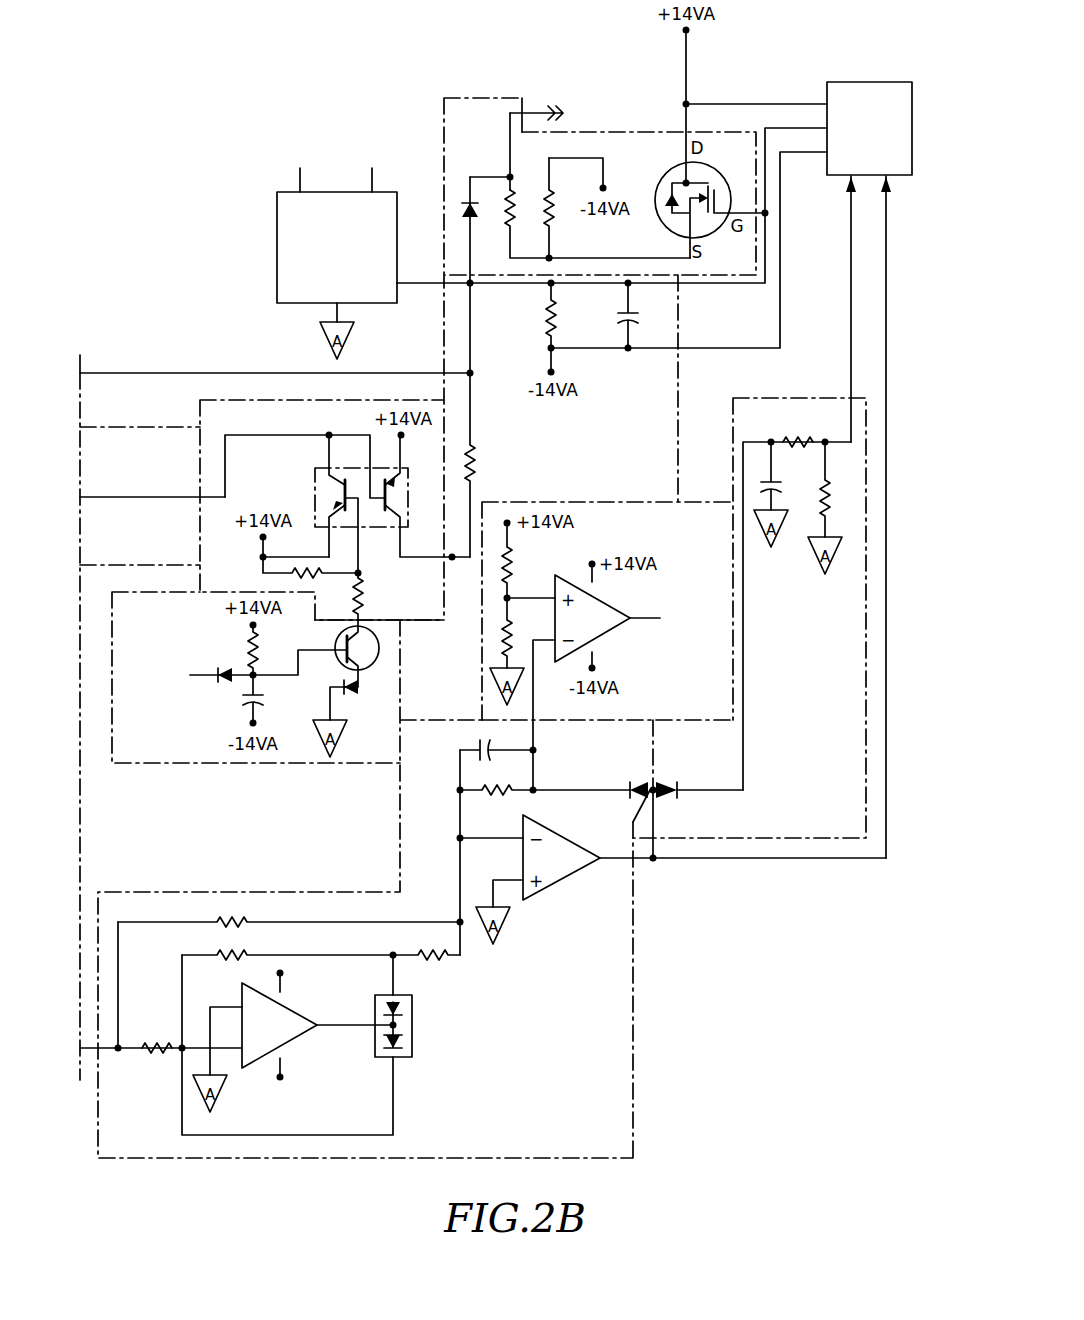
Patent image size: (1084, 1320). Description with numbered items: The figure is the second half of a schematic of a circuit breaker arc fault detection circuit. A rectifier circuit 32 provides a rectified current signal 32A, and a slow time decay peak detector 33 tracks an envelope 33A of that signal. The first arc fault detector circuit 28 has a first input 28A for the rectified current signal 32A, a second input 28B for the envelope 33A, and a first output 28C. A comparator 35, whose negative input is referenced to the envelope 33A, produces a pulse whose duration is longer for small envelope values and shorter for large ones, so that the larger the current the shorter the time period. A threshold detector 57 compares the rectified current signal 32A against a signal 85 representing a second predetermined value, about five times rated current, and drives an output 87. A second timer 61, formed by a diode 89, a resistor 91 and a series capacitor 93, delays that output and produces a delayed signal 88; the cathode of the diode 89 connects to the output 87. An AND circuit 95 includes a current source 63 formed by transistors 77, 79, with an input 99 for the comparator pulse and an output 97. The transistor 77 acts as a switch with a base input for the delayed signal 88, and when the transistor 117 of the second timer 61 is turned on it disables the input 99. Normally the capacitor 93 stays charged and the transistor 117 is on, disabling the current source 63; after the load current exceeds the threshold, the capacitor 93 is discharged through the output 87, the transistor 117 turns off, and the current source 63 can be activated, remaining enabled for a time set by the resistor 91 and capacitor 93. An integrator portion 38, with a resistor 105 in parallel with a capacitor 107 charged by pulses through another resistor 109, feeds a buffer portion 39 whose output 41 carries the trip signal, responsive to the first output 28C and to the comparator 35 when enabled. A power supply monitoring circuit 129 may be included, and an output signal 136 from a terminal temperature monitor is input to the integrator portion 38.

The first arc fault detector circuit 28 is at (858, 82).
The first input 28A is at (888, 186).
The second input 28B is at (851, 190).
The first output 28C is at (827, 128).
The rectifier circuit 32 is at (635, 1021).
The rectified current signal 32A is at (535, 730).
The slow time decay peak detector 33 is at (798, 398).
The envelope 33A is at (742, 795).
The comparator 35 is at (135, 427).
The integrator portion 38 is at (444, 327).
The buffer portion 39 is at (444, 104).
The output 41 is at (537, 113).
The threshold detector 57 is at (733, 500).
The second timer 61 is at (196, 765).
The current source 63 is at (355, 504).
The transistor 77 is at (345, 490).
The transistor 79 is at (402, 508).
The signal representative of a second predetermined value 85 is at (525, 596).
The output 87 is at (200, 672).
The delayed signal 88 is at (365, 616).
The diode 89 is at (222, 685).
The resistor 91 is at (247, 648).
The capacitor 93 is at (265, 698).
The AND circuit 95 is at (200, 412).
The output 97 is at (452, 560).
The input 99 is at (292, 435).
The resistor 105 is at (543, 320).
The capacitor 107 is at (620, 317).
The resistor 109 is at (482, 462).
The transistor 117 is at (380, 641).
The power supply monitoring circuit 129 is at (277, 215).
The output signal 136 is at (150, 373).